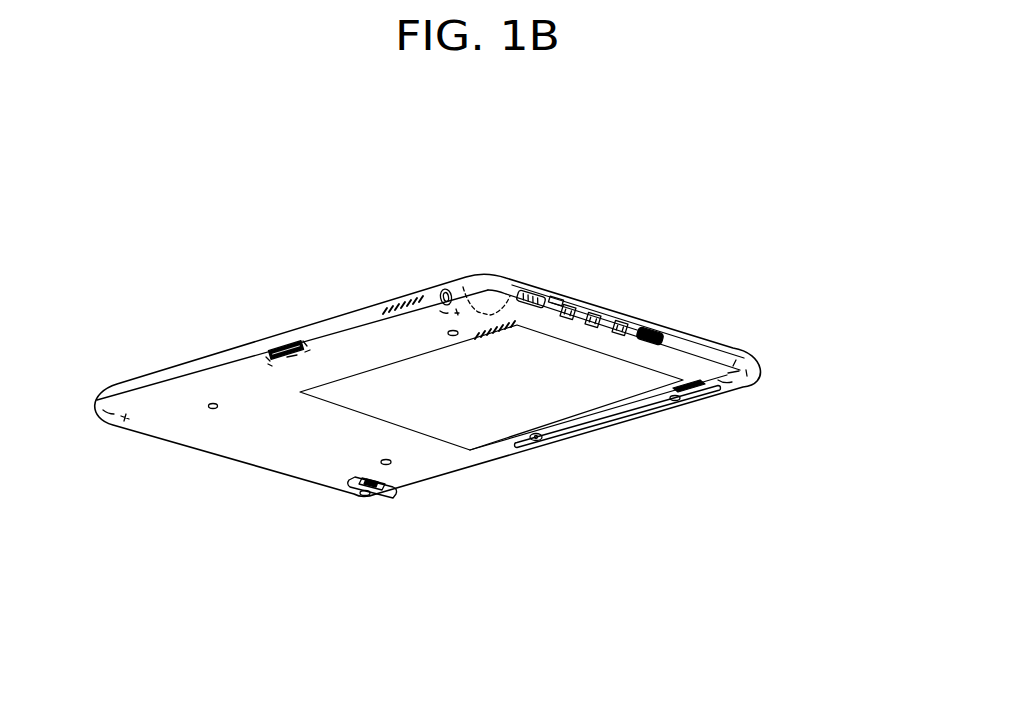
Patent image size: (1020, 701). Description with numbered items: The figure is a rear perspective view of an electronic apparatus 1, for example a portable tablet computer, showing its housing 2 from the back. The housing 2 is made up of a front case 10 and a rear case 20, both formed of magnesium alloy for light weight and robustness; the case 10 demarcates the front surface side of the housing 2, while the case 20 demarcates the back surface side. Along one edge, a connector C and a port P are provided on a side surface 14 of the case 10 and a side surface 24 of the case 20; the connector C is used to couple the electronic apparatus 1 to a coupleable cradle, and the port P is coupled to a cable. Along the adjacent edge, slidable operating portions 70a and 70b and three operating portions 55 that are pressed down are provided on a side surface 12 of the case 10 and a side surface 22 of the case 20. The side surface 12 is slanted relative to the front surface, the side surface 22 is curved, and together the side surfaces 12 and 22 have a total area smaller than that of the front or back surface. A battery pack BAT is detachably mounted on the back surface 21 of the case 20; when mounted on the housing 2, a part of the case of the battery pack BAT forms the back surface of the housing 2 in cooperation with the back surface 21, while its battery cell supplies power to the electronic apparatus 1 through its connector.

The electronic apparatus 1 is at (451, 386).
The housing 2 is at (148, 373).
The front case 10 is at (368, 305).
The side surface 12 is at (713, 346).
The side surface 14 is at (210, 362).
The rear case 20 is at (420, 453).
The back surface 21 is at (468, 456).
The side surface 22 is at (688, 340).
The side surface 24 is at (335, 340).
The connector C is at (283, 347).
The port P is at (448, 290).
The operating portions 55 is at (618, 326).
The operating portion 70a is at (534, 292).
The operating portion 70b is at (647, 327).
The battery pack BAT is at (553, 400).